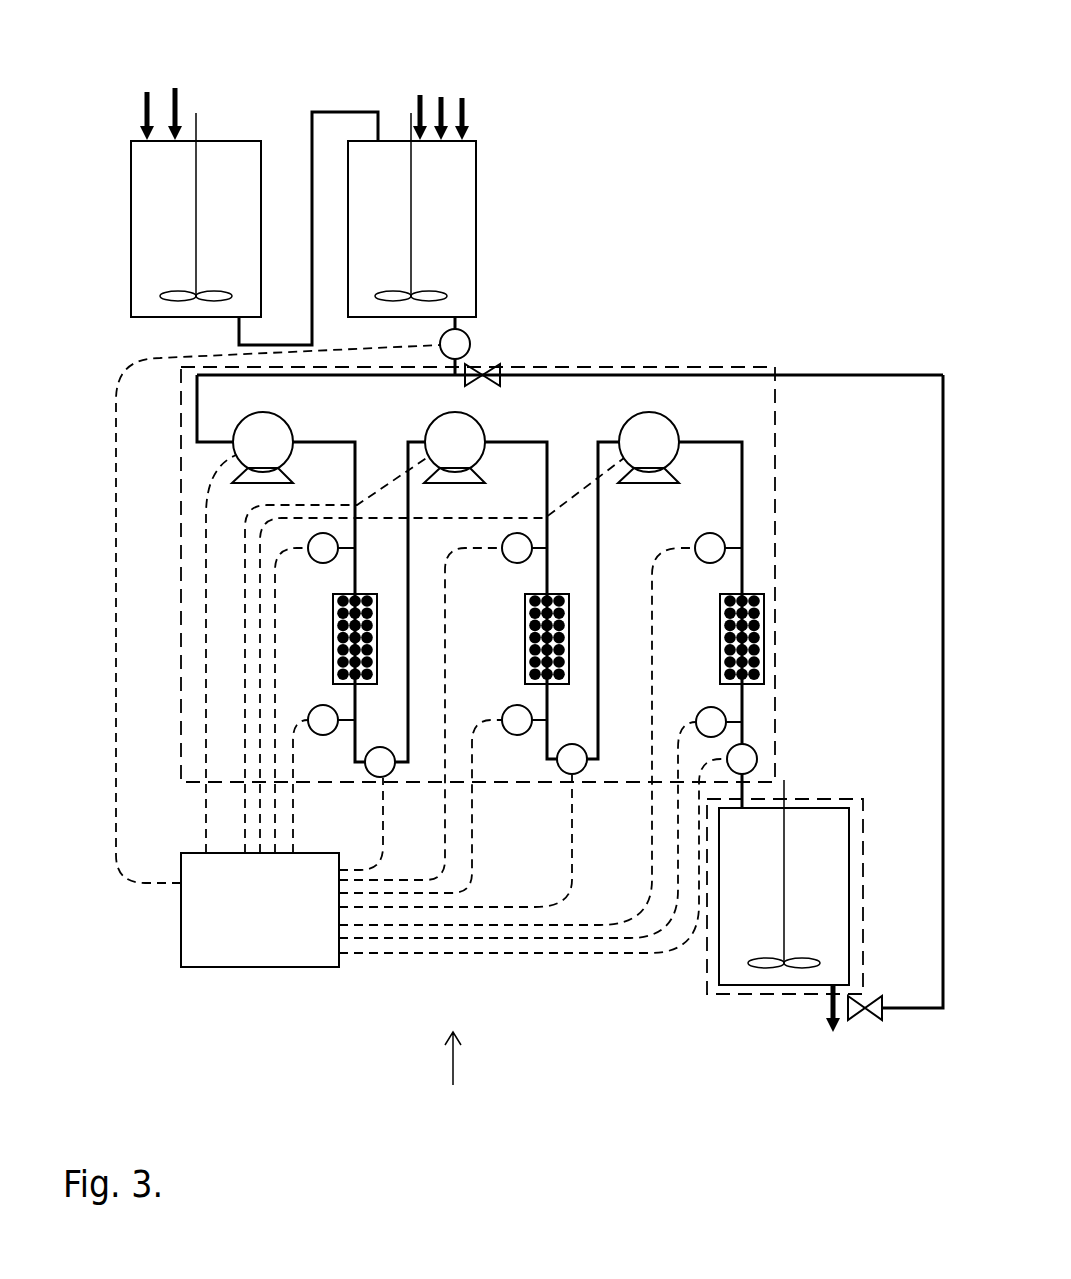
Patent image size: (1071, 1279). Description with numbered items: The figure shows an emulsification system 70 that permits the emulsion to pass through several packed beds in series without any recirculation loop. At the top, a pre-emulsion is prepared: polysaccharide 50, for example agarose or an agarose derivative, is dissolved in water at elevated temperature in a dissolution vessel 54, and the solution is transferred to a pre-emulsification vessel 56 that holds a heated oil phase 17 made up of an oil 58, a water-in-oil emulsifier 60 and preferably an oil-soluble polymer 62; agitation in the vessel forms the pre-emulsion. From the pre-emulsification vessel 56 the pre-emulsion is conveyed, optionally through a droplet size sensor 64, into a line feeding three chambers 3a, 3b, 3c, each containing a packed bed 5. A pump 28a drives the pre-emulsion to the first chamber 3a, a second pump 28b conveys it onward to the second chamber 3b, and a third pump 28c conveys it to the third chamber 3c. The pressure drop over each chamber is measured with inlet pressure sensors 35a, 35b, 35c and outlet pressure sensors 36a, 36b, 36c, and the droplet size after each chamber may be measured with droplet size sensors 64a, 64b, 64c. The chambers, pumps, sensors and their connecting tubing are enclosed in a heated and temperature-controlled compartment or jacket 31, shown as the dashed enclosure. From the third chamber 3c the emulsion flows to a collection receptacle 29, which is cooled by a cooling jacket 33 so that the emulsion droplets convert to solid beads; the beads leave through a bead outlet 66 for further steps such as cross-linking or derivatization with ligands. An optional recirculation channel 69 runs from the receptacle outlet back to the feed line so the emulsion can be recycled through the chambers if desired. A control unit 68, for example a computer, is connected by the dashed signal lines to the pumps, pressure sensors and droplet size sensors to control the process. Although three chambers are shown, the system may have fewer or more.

The polysaccharide 50 is at (147, 92).
The dissolution vessel 54 is at (132, 230).
The pre-emulsification vessel 56 is at (478, 228).
The oil 58 is at (420, 95).
The water-in-oil emulsifier 60 is at (442, 97).
The oil-soluble polymer 62 is at (462, 98).
The heated oil phase 17 is at (455, 280).
The droplet size sensor 64 is at (466, 334).
The pump 28a is at (238, 422).
The second pump 28b is at (478, 420).
The third pump 28c is at (671, 423).
The first chamber 3a is at (333, 637).
The second chamber 3b is at (567, 598).
The third chamber 3c is at (763, 617).
The packed bed 5 is at (762, 648).
The heated and temperature-controlled compartment or jacket 31 is at (777, 492).
The inlet pressure sensor 35a is at (315, 563).
The inlet pressure sensor 35b is at (502, 562).
The inlet pressure sensor 35c is at (700, 562).
The outlet pressure sensor 36a is at (312, 708).
The outlet pressure sensor 36b is at (520, 735).
The outlet pressure sensor 36c is at (721, 714).
The droplet size sensor 64a is at (368, 768).
The droplet size sensor 64b is at (583, 770).
The droplet size sensor 64c is at (752, 751).
The recirculation channel 69 is at (943, 578).
The collection receptacle 29 is at (852, 833).
The cooling jacket 33 is at (863, 894).
The bead outlet 66 is at (830, 1020).
The control unit 68 is at (237, 967).
The emulsification system 70 is at (454, 1080).